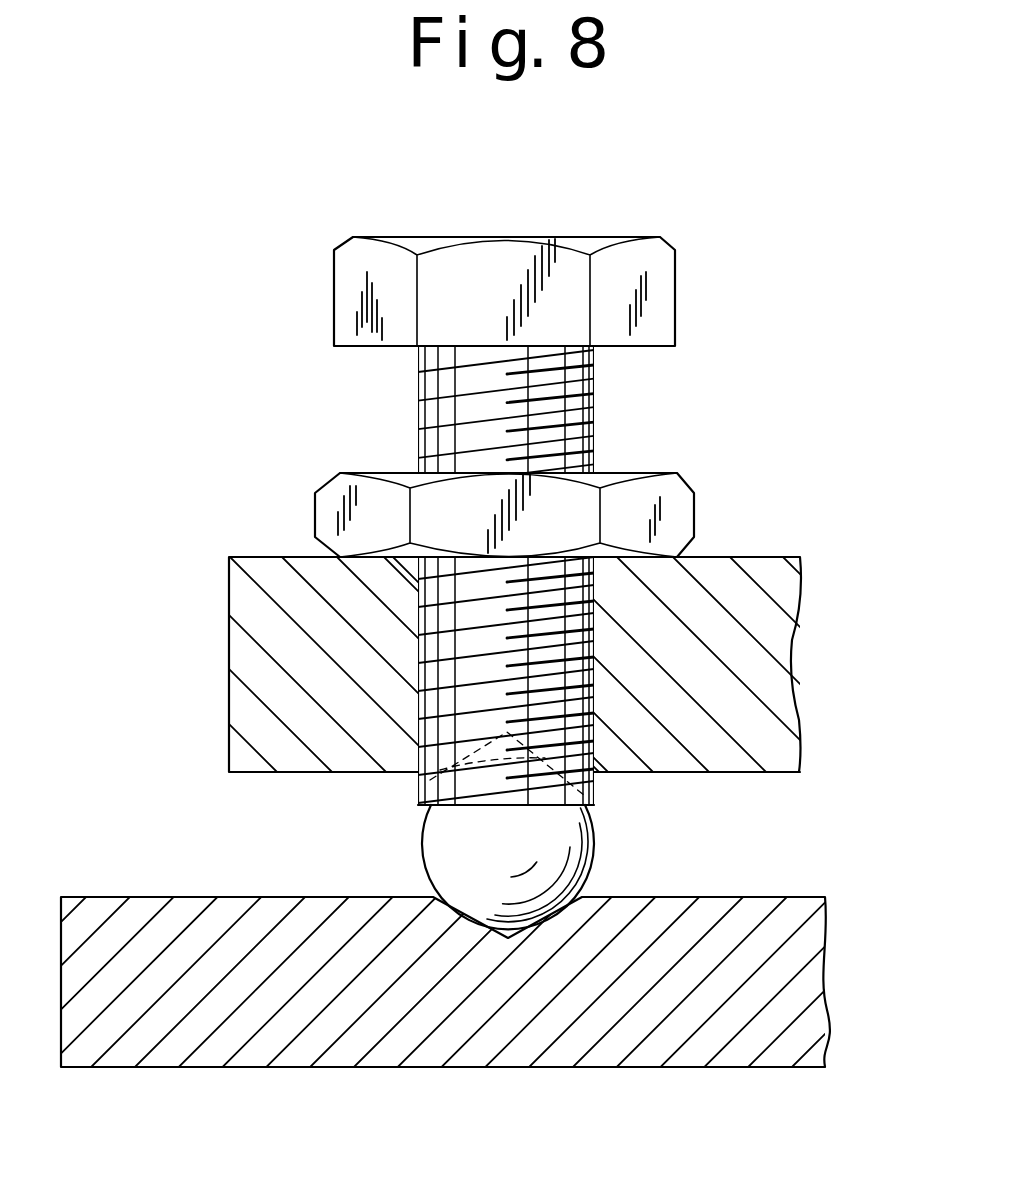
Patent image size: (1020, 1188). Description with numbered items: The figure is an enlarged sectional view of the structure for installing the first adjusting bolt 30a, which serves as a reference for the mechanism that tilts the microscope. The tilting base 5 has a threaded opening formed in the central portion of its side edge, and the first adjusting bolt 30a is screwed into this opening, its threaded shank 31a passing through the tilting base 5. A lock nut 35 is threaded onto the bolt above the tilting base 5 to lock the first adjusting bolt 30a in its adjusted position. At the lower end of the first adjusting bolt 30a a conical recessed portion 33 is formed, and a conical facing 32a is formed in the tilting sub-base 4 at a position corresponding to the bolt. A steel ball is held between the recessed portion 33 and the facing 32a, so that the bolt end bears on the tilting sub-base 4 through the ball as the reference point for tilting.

The first adjusting bolt 30a is at (502, 282).
The threaded shaft of bolt 31a is at (597, 680).
The lock nut 35 is at (662, 507).
The tilting base 5 is at (773, 637).
The conical recessed portion 33 is at (416, 790).
The conical facing 32a is at (503, 938).
The tilting sub-base 4 is at (755, 1037).